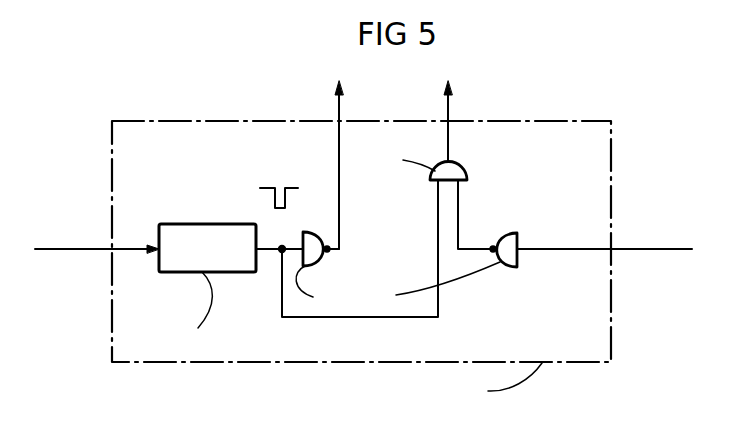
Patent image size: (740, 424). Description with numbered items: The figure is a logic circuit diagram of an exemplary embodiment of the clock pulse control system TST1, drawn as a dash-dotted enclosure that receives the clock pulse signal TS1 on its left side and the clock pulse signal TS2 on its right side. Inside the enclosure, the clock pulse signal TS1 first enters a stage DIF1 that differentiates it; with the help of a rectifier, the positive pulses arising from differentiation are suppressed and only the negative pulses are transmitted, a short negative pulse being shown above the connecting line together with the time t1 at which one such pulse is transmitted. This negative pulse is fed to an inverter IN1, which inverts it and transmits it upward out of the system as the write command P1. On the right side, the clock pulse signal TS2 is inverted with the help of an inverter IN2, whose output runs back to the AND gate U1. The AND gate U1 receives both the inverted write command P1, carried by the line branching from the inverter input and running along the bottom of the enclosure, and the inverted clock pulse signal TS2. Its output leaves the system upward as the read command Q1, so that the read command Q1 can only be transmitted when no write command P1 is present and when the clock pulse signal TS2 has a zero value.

The clock pulse control system TST1 is at (538, 106).
The clock pulse signal TS1 is at (97, 235).
The clock pulse signal TS2 is at (604, 235).
The stage DIF1 is at (199, 287).
The time t1 is at (274, 185).
The inverter IN1 is at (398, 256).
The inverter IN2 is at (510, 236).
The AND gate U1 is at (427, 187).
The write command P1 is at (349, 165).
The read command Q1 is at (458, 121).